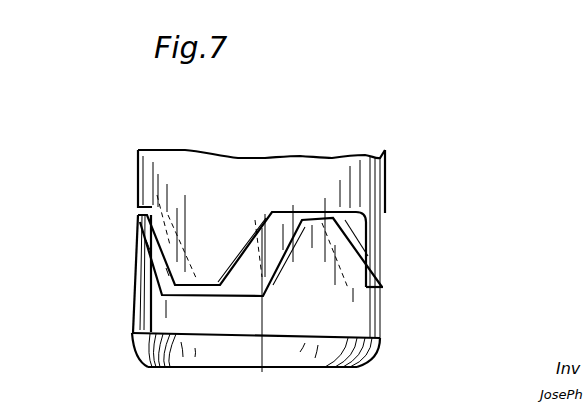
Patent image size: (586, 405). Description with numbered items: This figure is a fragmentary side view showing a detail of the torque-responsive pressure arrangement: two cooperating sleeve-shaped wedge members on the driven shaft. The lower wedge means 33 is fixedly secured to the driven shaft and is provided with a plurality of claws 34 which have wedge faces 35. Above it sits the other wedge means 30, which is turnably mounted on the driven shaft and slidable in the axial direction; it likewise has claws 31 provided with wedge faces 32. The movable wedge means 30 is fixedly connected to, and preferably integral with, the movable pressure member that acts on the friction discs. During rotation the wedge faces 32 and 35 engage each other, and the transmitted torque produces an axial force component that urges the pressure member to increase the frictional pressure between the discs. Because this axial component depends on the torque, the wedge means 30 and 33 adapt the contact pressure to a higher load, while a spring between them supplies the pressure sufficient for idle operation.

The wedge means 30 is at (178, 177).
The claws 31 is at (355, 265).
The wedge faces 32 is at (357, 247).
The wedge means 33 is at (337, 325).
The claws 34 is at (147, 245).
The wedge faces 35 is at (167, 272).